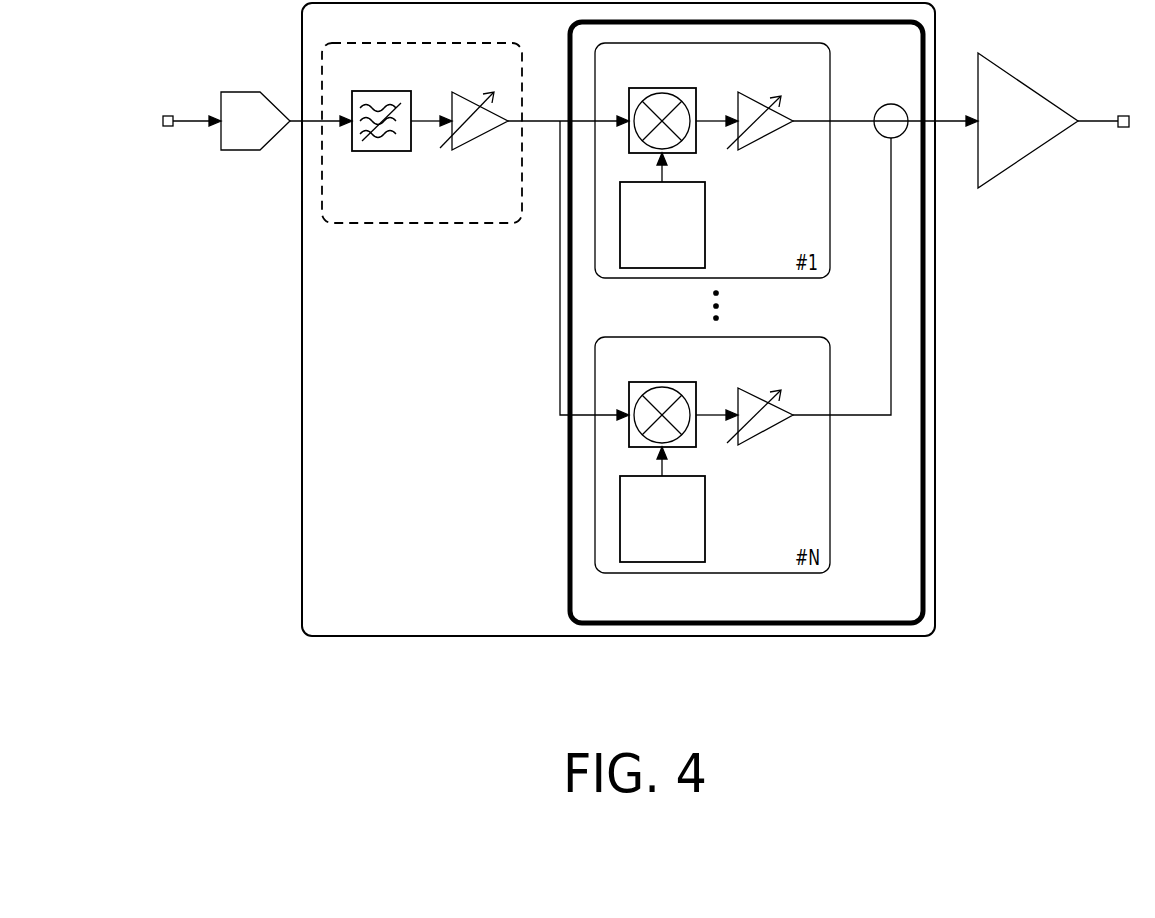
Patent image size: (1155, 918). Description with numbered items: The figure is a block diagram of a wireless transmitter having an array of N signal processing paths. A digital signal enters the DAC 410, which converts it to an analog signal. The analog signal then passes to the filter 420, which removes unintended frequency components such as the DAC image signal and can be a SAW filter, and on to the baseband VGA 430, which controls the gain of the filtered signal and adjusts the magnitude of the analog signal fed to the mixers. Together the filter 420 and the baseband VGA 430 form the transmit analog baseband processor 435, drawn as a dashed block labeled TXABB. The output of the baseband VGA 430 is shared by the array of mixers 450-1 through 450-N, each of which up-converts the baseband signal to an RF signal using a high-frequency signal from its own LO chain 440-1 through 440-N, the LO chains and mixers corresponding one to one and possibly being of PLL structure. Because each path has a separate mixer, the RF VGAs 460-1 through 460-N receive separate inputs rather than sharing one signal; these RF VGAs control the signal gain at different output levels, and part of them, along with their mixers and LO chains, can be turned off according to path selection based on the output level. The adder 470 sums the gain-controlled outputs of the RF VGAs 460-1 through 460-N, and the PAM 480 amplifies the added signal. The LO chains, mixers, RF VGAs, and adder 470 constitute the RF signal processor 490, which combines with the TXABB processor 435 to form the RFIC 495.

The DAC 410 is at (242, 89).
The filter 420 is at (382, 91).
The baseband VGA 430 is at (482, 137).
The transmit analog baseband (TXABB) processor 435 is at (478, 223).
The first LO chain 440-1 is at (706, 225).
The N-th LO chain 440-N is at (706, 520).
The first mixer 450-1 is at (679, 76).
The N-th mixer 450-N is at (679, 370).
The first RF VGA 460-1 is at (768, 137).
The N-th RF VGA 460-N is at (768, 432).
The adder 470 is at (886, 105).
The PAM 480 is at (1030, 85).
The RF signal processor 490 is at (925, 370).
The RFIC 495 is at (302, 292).